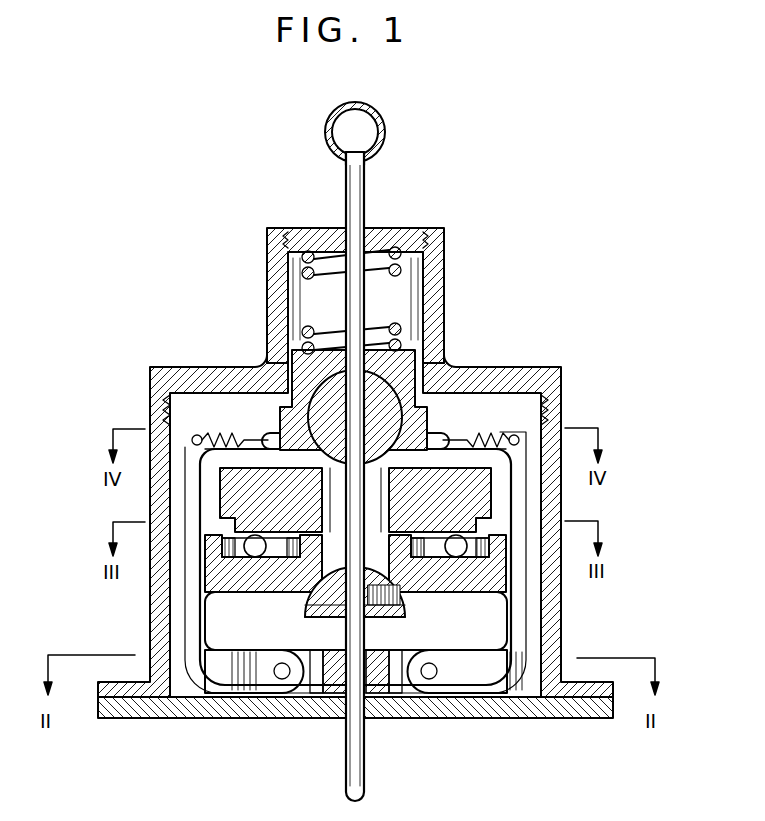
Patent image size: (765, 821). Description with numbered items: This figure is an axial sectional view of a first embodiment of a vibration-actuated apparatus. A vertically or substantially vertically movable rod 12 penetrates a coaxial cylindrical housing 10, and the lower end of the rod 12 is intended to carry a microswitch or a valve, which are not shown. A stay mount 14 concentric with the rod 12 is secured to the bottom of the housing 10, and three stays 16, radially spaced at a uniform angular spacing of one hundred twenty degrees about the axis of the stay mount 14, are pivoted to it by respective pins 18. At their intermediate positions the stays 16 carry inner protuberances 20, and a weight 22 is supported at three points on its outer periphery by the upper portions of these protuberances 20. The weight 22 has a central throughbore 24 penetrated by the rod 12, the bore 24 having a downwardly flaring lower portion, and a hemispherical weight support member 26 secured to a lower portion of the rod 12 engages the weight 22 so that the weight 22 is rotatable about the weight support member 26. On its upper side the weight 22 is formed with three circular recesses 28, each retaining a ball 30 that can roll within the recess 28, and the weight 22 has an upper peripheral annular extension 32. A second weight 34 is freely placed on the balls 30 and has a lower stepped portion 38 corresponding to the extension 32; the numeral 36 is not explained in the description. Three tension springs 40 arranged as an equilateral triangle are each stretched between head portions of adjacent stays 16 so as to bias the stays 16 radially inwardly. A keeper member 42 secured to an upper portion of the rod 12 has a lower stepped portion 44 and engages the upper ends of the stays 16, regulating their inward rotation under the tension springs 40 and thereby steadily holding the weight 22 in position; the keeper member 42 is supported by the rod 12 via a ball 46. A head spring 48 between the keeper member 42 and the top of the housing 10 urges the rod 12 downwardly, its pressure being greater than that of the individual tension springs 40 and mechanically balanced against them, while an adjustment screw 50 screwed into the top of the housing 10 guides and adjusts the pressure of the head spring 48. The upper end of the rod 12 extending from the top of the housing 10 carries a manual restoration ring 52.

The housing 10 is at (541, 361).
The rod 12 is at (366, 631).
The stay mount 14 is at (468, 705).
The stays 16 is at (187, 627).
The pins 18 is at (282, 680).
The inner protuberances 20 is at (222, 608).
The weight 22 is at (500, 581).
The central throughbore 24 is at (376, 566).
The weight support member 26 is at (315, 603).
The circular recesses 28 is at (273, 558).
The ball 30 is at (240, 560).
The upper peripheral annular extension 32 is at (500, 528).
The second weight 34 is at (490, 485).
The hub 36 is at (385, 496).
The lower stepped portion 38 is at (505, 517).
The tension springs 40 is at (470, 431).
The keeper member 42 is at (418, 372).
The lower stepped portion 44 is at (264, 434).
The ball 46 is at (385, 396).
The head spring 48 is at (410, 230).
The adjustment screw 50 is at (380, 228).
The manual restoration ring 52 is at (385, 120).